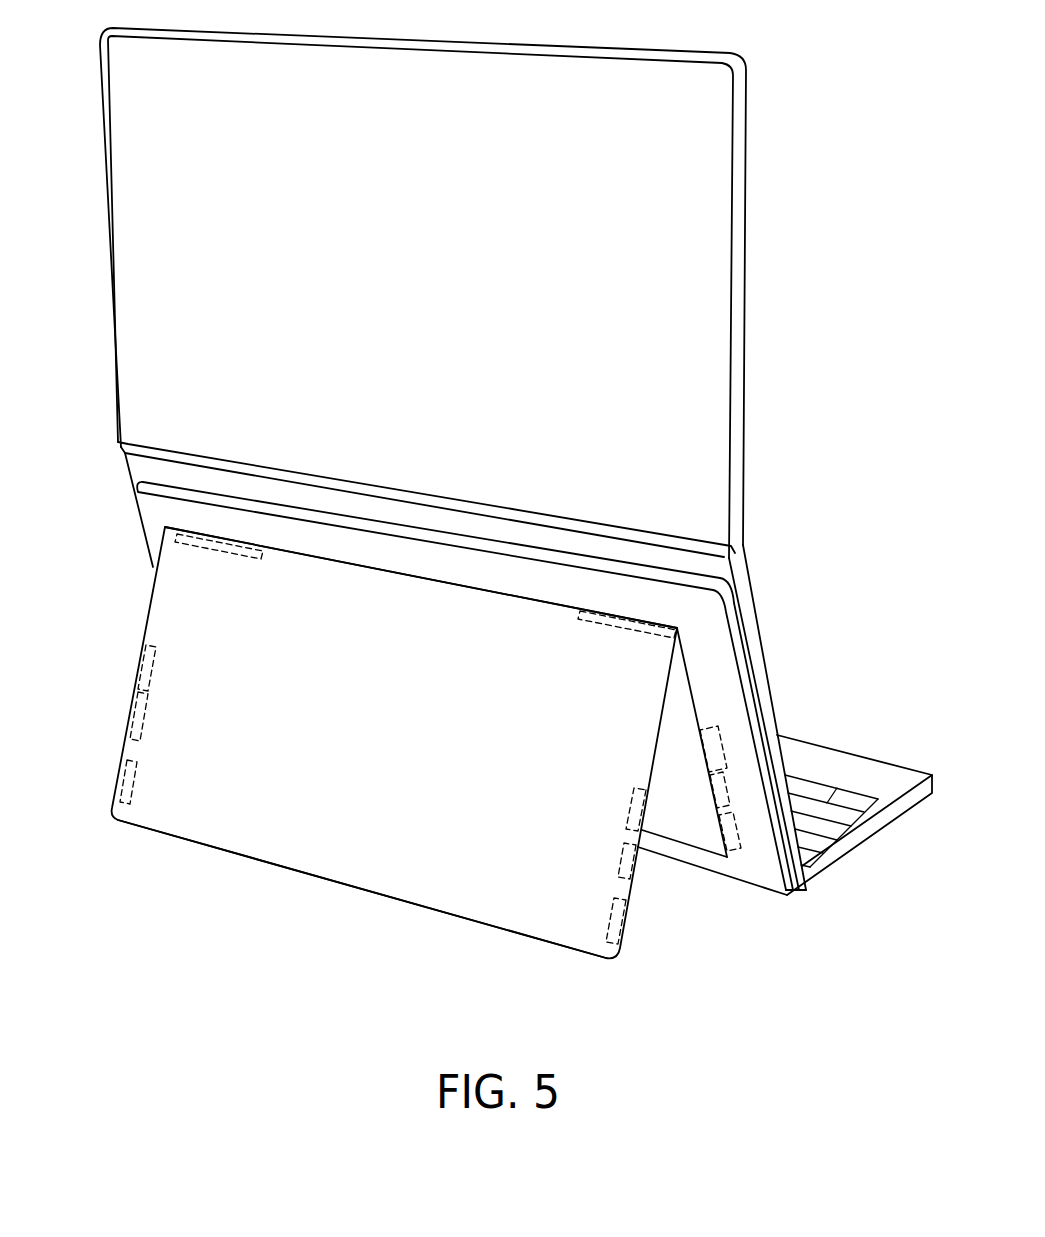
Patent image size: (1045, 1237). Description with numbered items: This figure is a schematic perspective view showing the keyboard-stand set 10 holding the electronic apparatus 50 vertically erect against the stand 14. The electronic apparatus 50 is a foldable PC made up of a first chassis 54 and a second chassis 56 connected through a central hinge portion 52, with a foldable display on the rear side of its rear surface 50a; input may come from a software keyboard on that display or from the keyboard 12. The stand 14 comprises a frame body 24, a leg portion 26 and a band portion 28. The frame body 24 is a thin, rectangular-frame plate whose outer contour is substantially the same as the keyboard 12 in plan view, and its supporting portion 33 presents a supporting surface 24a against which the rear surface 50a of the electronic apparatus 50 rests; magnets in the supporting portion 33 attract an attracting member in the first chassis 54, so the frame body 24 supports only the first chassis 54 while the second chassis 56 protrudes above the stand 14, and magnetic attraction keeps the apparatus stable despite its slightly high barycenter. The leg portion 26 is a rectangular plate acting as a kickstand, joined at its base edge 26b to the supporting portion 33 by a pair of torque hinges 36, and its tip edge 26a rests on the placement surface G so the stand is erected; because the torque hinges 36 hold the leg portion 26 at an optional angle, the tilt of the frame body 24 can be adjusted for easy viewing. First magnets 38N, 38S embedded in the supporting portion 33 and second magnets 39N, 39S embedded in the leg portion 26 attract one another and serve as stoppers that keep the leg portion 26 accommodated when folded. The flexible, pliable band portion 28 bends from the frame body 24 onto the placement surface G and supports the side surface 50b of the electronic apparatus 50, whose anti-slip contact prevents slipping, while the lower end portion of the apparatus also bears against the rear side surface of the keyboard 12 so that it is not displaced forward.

The keyboard-stand set 10 is at (836, 962).
The keyboard 12 is at (878, 847).
The stand 14 is at (699, 946).
The frame body 24 is at (468, 572).
The supporting surface 24a is at (788, 838).
The leg portion 26 is at (340, 846).
The tip edge 26a is at (428, 908).
The base edge 26b is at (393, 575).
The band portion 28 is at (797, 924).
The supporting portion 33 is at (717, 665).
The torque hinge 36 is at (213, 548).
The first magnet 38N is at (722, 742).
The first magnet 38S is at (740, 830).
The second magnet 39N is at (137, 670).
The second magnet 39S is at (120, 780).
The electronic apparatus 50 is at (798, 72).
The rear surface 50a is at (713, 572).
The side surface 50b is at (803, 893).
The hinge portion 52 is at (593, 528).
The first chassis 54 is at (758, 612).
The second chassis 56 is at (709, 266).
The placement surface G is at (663, 918).